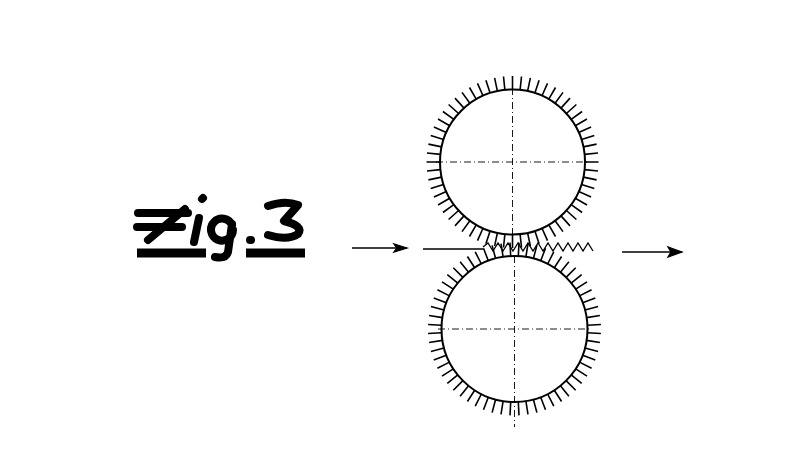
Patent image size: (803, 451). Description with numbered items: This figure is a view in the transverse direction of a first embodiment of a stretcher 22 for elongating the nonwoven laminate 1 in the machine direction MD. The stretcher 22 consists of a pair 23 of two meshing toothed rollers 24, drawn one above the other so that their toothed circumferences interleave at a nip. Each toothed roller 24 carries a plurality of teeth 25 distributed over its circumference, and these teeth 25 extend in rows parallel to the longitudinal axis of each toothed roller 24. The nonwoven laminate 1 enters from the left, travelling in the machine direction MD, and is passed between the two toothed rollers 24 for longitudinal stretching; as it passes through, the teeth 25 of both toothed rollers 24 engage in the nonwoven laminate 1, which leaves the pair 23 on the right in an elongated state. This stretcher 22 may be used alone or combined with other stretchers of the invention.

The nonwoven laminate 1 is at (428, 248).
The stretcher 22 is at (627, 92).
The pair of meshing toothed rollers 23 is at (614, 168).
The toothed roller 24 is at (456, 126).
The teeth 25 is at (548, 96).
The machine direction MD is at (363, 250).